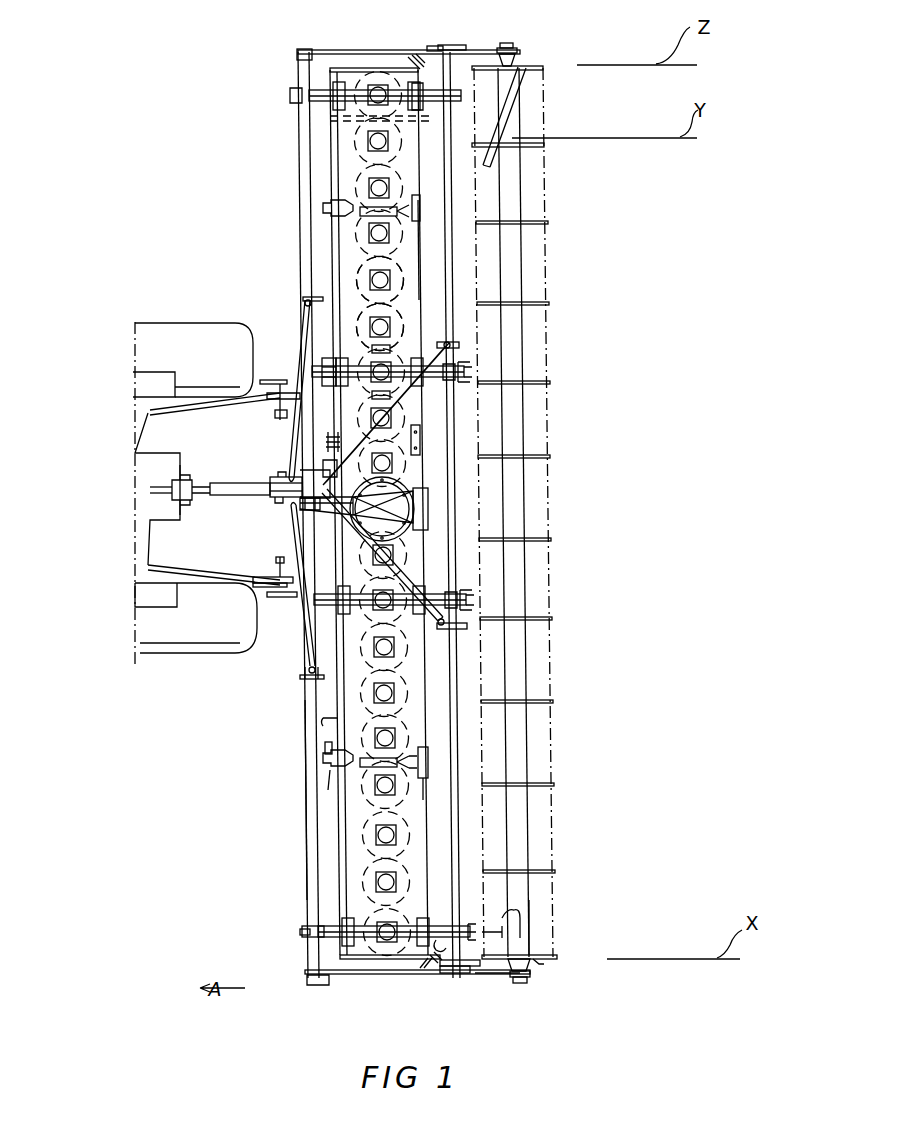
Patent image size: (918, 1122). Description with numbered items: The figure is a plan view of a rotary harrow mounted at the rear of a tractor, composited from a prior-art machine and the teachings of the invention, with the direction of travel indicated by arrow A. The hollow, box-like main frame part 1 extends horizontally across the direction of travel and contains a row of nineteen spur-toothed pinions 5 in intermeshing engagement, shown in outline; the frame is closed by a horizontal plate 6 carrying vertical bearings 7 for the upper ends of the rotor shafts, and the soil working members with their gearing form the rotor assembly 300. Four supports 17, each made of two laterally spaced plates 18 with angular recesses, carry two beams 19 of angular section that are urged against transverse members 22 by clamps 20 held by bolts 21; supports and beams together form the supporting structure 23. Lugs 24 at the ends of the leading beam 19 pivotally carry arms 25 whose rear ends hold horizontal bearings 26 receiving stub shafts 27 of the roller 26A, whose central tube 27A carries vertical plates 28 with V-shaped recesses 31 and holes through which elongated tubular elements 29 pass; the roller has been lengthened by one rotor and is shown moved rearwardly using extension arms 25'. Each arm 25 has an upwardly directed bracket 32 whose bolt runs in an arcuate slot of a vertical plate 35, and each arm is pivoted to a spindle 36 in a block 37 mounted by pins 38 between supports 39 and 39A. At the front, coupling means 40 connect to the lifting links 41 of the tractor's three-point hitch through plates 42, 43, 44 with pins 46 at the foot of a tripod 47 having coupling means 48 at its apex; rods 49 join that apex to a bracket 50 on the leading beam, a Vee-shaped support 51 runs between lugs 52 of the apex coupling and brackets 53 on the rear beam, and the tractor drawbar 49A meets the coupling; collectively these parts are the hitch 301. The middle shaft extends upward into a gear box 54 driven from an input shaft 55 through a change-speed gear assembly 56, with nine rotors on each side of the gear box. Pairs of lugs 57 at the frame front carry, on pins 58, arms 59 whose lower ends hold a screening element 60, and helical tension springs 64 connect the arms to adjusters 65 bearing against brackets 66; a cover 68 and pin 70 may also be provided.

The main frame part 1 is at (419, 268).
The spur-toothed pinion 5 is at (366, 280).
The horizontal plate 6 is at (365, 141).
The vertical bearing 7 is at (368, 322).
The support 17 is at (310, 140).
The plate 18 is at (322, 620).
The beam 19 is at (300, 139).
The clamp 20 is at (304, 926).
The bolt 21 is at (300, 933).
The transverse member 22 is at (462, 590).
The supporting structure 23 is at (306, 795).
The lug 24 is at (308, 48).
The arm 25 is at (414, 509).
The extension arm 25' is at (504, 1002).
The horizontal bearing 26 is at (512, 44).
The roller 26A is at (560, 585).
The stub shaft 27 is at (540, 964).
The central tube 27A is at (530, 903).
The plate 28 is at (543, 68).
The elongated tubular element 29 is at (504, 122).
The V-shaped recess 31 is at (293, 97).
The bracket 32 is at (410, 62).
The vertical plate 35 is at (345, 68).
The spindle 36 is at (425, 100).
The block 37 is at (438, 968).
The pin 38 is at (432, 46).
The support 39 is at (452, 46).
The support 39A is at (440, 950).
The coupling means 40 is at (270, 402).
The lifting link 41 is at (185, 405).
The plate 42 is at (268, 578).
The plate 43 is at (280, 566).
The plate 44 is at (296, 597).
The pin 46 is at (268, 382).
The tripod 47 is at (300, 512).
The coupling means 48 is at (272, 478).
The rod 49 is at (292, 312).
The tractor drawbar 49A is at (222, 483).
The bracket 50 is at (304, 299).
The Vee-shaped support 51 is at (436, 345).
The lug 52 is at (320, 476).
The bracket 53 is at (460, 345).
The gear box 54 is at (413, 532).
The input shaft 55 is at (318, 517).
The change-speed gear assembly 56 is at (425, 490).
The lug 57 is at (335, 770).
The pin 58 is at (327, 745).
The arm 59 is at (323, 208).
The screening element 60 is at (325, 723).
The helical tension spring 64 is at (413, 434).
The adjuster 65 is at (428, 768).
The bracket 66 is at (428, 778).
The cover 68 is at (365, 372).
The pin 70 is at (328, 396).
The rotor assembly 300 is at (344, 175).
The hitch 301 is at (234, 521).